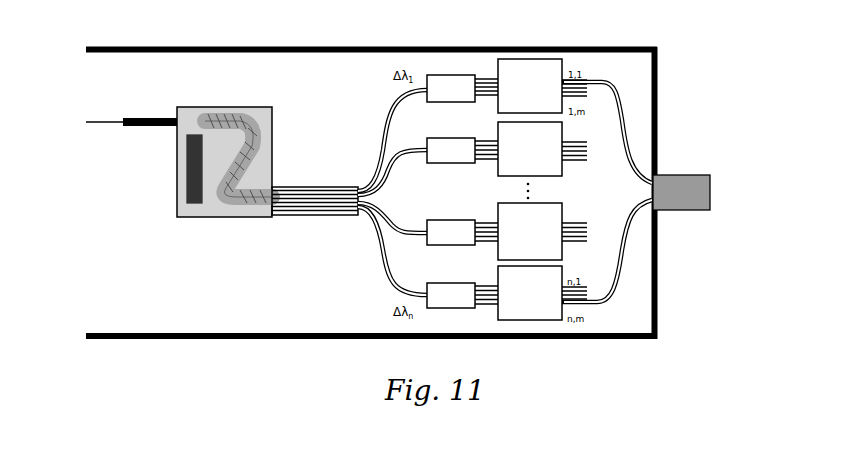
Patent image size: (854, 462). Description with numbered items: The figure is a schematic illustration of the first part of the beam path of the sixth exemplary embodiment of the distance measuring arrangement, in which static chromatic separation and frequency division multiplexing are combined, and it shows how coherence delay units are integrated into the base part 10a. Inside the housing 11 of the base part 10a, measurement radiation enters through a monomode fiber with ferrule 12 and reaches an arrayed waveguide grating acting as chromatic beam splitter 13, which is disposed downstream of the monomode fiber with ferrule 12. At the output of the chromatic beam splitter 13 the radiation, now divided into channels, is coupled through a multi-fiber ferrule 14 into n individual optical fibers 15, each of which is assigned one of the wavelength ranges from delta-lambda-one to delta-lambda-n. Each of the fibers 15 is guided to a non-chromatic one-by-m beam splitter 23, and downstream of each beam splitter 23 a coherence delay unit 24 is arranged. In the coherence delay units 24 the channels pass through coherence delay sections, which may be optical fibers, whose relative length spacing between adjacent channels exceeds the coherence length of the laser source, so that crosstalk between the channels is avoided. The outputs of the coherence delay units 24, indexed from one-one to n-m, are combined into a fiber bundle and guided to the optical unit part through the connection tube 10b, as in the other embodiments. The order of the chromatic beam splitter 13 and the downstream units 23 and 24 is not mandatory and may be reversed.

The base part 10a is at (192, 363).
The connection tube 10b is at (686, 229).
The housing 11 is at (243, 47).
The monomode fiber with ferrule 12 is at (138, 118).
The chromatic beam splitter 13 is at (253, 117).
The multi-fiber ferrule 14 is at (287, 193).
The individual optical fibers 15 is at (393, 270).
The non-chromatic 1×m beam splitter 23 is at (453, 219).
The coherence delay units 24 is at (525, 215).